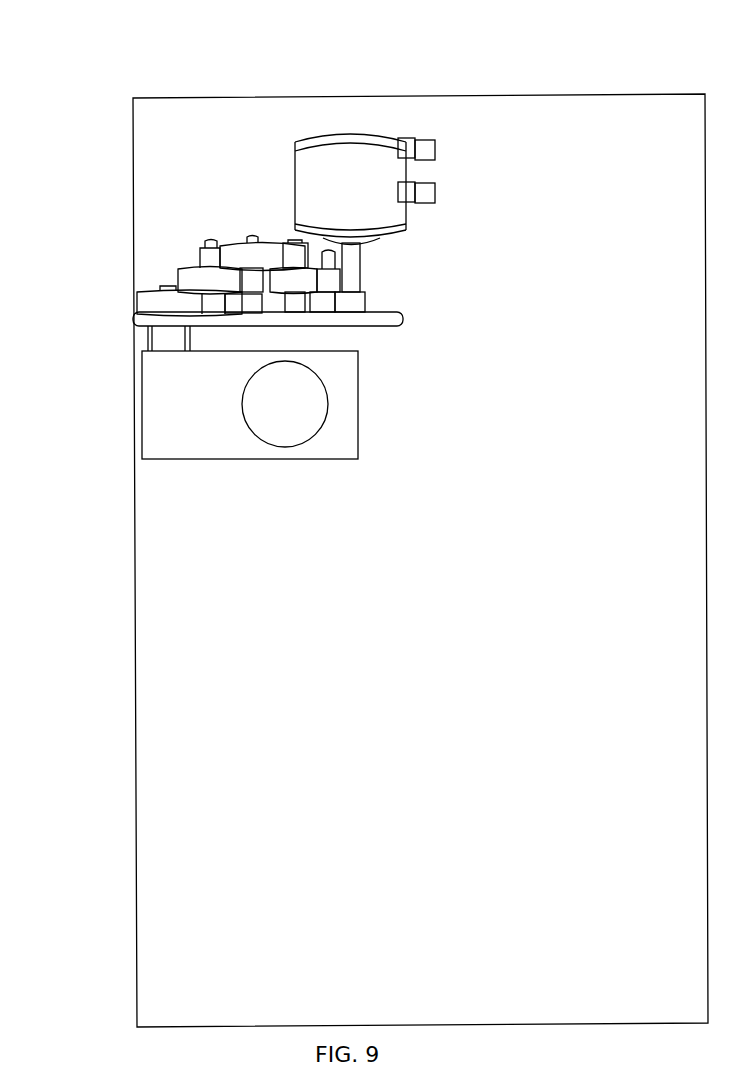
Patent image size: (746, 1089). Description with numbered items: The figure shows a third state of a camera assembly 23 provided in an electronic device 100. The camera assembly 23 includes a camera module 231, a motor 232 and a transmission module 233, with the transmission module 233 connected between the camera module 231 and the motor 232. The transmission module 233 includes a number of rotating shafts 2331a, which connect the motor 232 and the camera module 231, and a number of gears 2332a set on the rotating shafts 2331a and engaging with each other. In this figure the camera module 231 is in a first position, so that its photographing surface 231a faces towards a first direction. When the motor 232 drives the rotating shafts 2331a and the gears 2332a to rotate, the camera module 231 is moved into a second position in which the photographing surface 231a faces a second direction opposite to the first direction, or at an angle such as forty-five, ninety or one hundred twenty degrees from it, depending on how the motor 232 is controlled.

The electronic device 100 is at (458, 44).
The camera assembly 23 is at (235, 177).
The camera module 231 is at (205, 404).
The photographing surface 231a is at (283, 422).
The motor 232 is at (348, 152).
The transmission module 233 is at (230, 230).
The rotating shafts 2331a is at (252, 237).
The gears 2332a is at (235, 255).